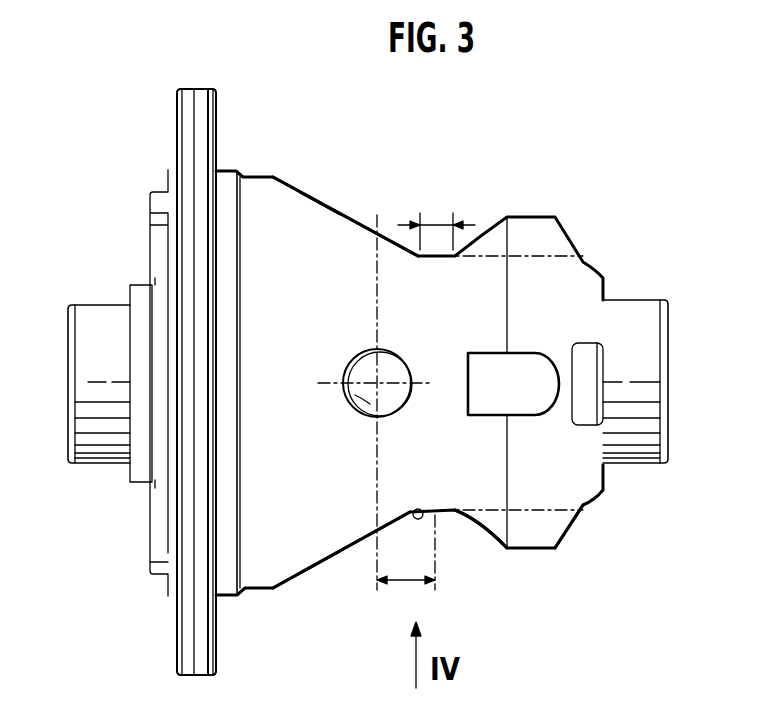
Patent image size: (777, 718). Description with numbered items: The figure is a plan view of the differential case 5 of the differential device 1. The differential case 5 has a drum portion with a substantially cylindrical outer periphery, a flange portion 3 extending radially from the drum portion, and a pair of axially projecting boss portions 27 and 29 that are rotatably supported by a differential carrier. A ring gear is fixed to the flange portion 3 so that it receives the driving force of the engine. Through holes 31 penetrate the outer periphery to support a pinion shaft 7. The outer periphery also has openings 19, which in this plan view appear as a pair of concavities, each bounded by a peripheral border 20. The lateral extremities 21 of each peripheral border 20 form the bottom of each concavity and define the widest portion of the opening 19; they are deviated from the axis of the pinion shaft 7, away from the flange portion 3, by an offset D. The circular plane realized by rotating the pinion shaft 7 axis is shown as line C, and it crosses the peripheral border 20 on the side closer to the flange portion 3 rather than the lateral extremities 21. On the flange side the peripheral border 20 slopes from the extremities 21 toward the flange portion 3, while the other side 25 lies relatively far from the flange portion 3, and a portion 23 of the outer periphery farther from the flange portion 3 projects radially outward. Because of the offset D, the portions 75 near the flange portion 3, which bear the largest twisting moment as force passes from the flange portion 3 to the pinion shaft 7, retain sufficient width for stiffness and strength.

The differential device 1 is at (652, 142).
The flange portion 3 is at (185, 128).
The differential case 5 is at (527, 186).
The pinion shaft 7 is at (362, 372).
The openings 19 is at (349, 208).
The peripheral border 20 is at (318, 200).
The lateral extremities 21 is at (438, 213).
The projecting portion of outer periphery 23 is at (567, 533).
The other side of peripheral border 25 is at (483, 545).
The boss portion 27 is at (98, 305).
The boss portion 29 is at (635, 300).
The through holes 31 is at (363, 403).
The portions close to the flange portion 75 is at (292, 250).
The line C is at (377, 215).
The offset D is at (406, 566).